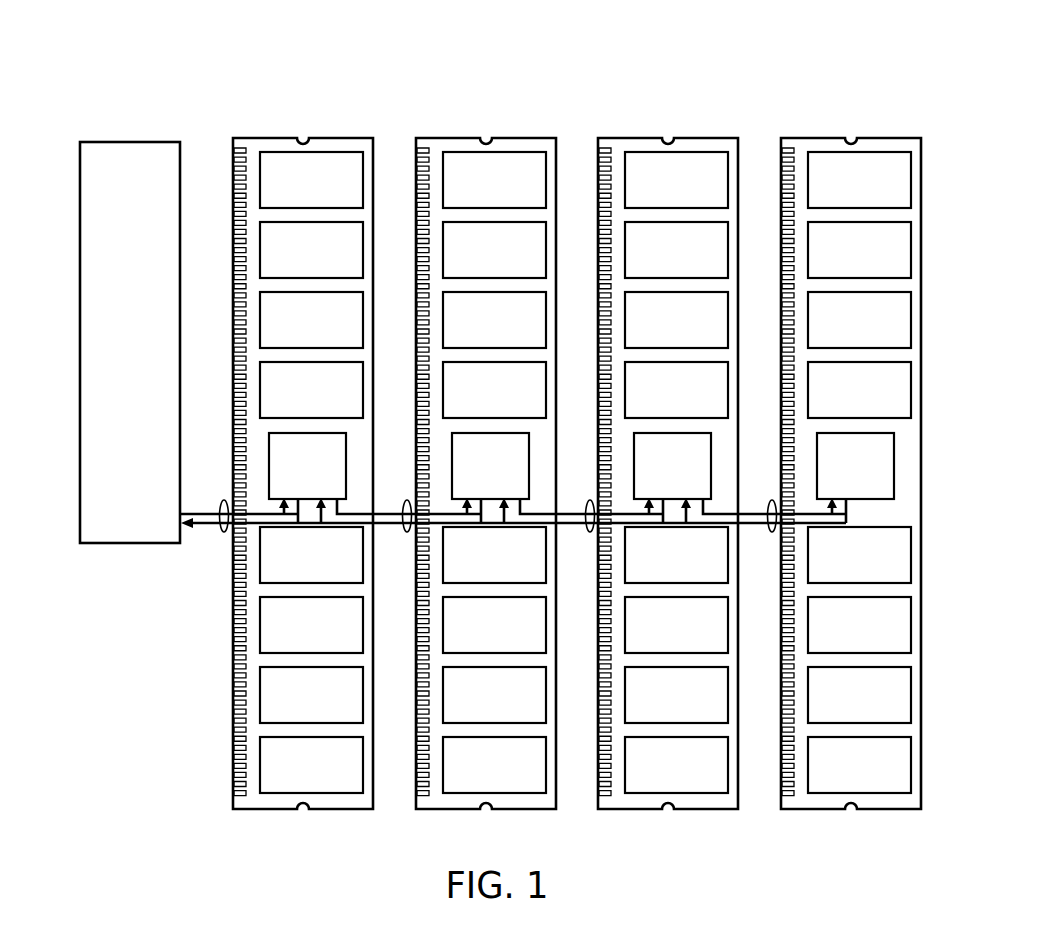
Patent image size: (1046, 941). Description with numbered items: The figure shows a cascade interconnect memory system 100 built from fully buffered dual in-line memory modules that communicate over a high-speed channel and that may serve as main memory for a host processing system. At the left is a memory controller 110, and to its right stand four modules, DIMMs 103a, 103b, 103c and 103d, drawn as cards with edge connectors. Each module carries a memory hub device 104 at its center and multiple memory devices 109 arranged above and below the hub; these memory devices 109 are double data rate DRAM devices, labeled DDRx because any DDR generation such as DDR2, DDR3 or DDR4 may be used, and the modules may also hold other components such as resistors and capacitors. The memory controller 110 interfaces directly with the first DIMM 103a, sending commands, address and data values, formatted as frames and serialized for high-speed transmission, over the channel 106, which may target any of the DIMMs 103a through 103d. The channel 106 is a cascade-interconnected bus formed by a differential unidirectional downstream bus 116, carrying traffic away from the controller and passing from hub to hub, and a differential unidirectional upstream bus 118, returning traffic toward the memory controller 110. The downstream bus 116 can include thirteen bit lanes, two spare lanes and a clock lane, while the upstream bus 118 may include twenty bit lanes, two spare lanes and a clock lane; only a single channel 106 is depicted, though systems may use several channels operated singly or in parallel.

The memory system 100 is at (769, 35).
The memory controller 110 is at (153, 143).
The DIMM 103a is at (341, 139).
The DIMM 103b is at (524, 139).
The DIMM 103c is at (706, 139).
The DIMM 103d is at (873, 139).
The memory device 109 is at (293, 204).
The memory hub device 104 is at (289, 491).
The channel 106 is at (224, 500).
The downstream bus 116 is at (200, 512).
The upstream bus 118 is at (208, 525).